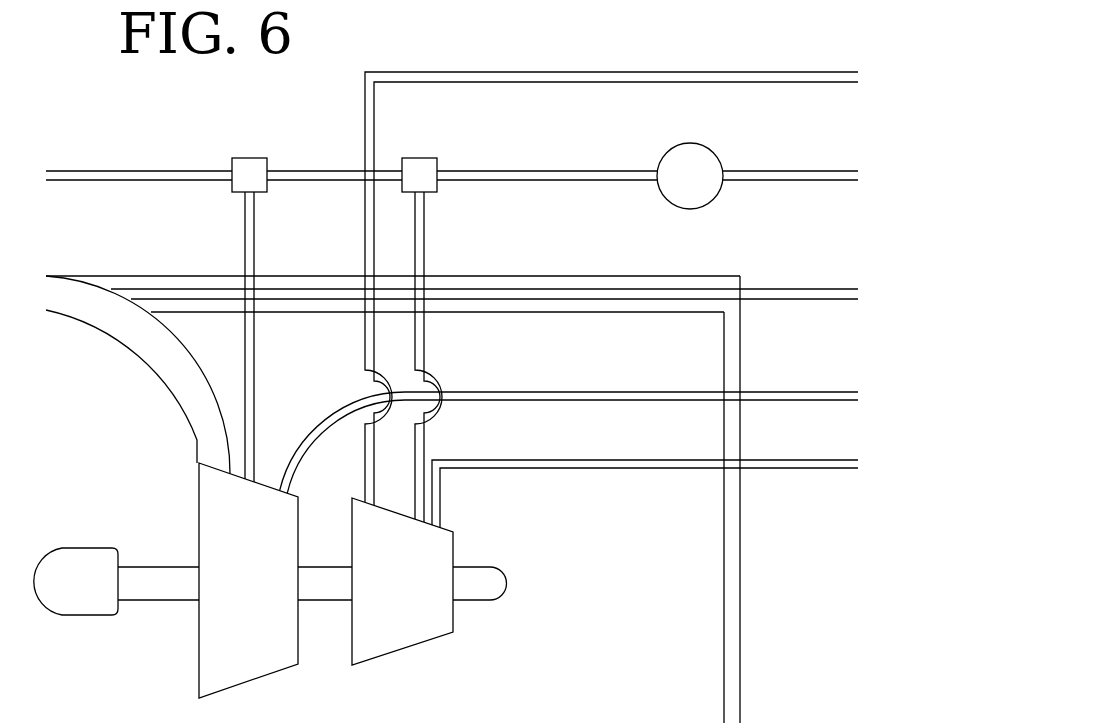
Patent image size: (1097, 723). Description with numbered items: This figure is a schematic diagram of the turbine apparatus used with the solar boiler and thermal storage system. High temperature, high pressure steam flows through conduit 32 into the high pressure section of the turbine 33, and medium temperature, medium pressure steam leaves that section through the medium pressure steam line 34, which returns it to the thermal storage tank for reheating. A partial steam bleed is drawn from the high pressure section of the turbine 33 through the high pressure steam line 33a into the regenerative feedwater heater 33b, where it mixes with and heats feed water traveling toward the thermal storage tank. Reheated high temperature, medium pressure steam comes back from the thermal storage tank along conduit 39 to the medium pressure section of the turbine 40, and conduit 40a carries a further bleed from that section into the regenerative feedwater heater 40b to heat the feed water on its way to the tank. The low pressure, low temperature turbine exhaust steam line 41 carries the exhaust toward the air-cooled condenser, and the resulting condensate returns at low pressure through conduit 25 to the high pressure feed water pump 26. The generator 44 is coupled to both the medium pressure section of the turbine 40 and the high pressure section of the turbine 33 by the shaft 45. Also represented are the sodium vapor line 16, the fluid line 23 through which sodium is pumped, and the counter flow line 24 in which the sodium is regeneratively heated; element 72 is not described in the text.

The sodium vapor line 16 is at (786, 288).
The fluid line 23 is at (744, 358).
The counter flow line 24 is at (647, 277).
The conduit 25 is at (163, 168).
The high pressure feed water pump 26 is at (677, 189).
The high pressure, high temperature steam line 32 is at (622, 462).
The high pressure section of the turbine 33 is at (385, 593).
The high pressure steam line 33a is at (430, 347).
The regenerative feedwater heater 33b is at (423, 160).
The medium pressure, medium temperature steam line 34 is at (503, 69).
The high temperature, medium pressure steam line 39 is at (675, 390).
The medium pressure section of the turbine 40 is at (233, 592).
The medium pressure steam line 40a is at (262, 392).
The regenerative feedwater heater 40b is at (251, 160).
The low pressure, low temperature turbine exhaust steam line 41 is at (158, 363).
The generator 44 is at (64, 597).
The shaft 45 is at (150, 563).
The compressor 72 is at (466, 718).